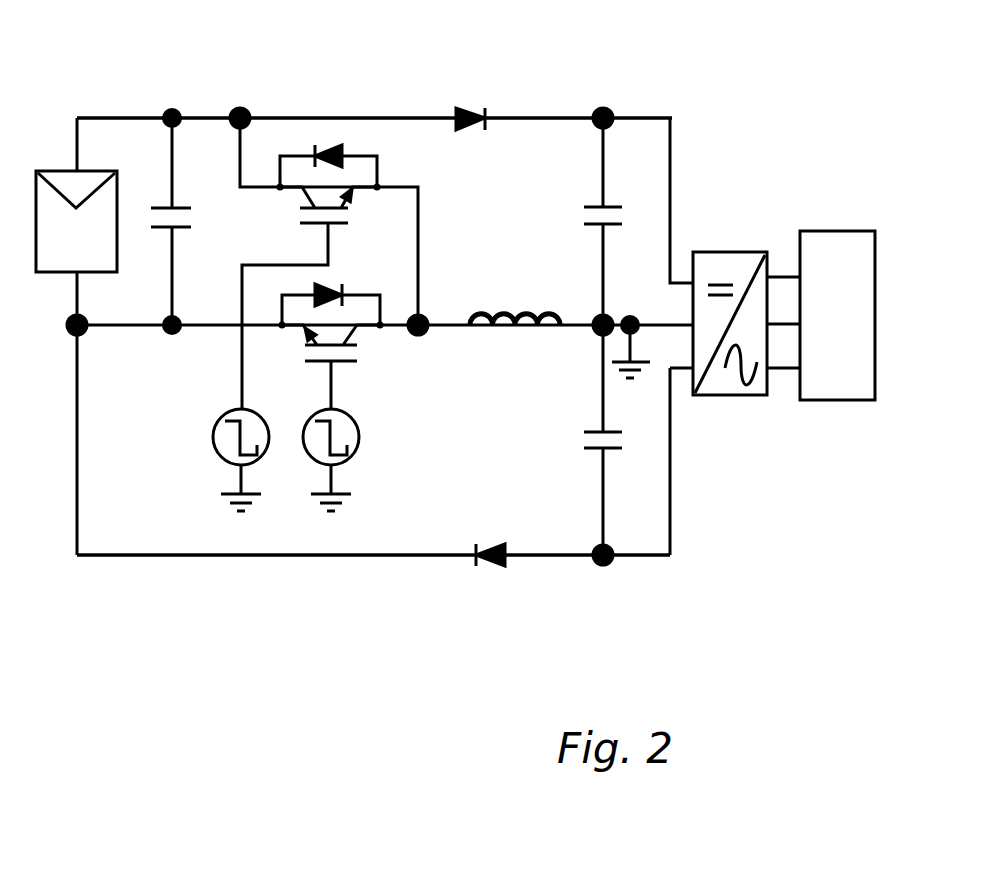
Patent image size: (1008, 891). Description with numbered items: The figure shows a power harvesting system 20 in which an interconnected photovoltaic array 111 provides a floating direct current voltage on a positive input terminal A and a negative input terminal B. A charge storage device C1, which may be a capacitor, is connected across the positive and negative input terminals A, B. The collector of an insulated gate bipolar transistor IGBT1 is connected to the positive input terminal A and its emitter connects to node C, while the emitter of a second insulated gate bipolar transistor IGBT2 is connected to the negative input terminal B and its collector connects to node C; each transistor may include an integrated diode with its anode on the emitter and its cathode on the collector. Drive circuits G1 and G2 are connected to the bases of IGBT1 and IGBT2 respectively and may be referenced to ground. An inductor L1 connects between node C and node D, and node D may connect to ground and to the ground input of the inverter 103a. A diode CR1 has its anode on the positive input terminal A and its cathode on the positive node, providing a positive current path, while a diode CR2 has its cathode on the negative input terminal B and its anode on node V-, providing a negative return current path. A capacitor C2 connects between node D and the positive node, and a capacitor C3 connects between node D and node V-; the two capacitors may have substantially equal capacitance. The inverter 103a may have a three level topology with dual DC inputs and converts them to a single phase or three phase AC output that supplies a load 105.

The power harvesting system 20 is at (376, 618).
The photovoltaic array 111 is at (76, 221).
The charge storage device C1 is at (179, 221).
The insulated gate bipolar transistor IGBT1 is at (329, 263).
The insulated gate bipolar transistor IGBT2 is at (343, 346).
The drive circuit G1 is at (213, 433).
The drive circuit G2 is at (359, 433).
The inductor L1 is at (515, 304).
The capacitor C2 is at (584, 221).
The capacitor C3 is at (583, 440).
The diode CR1 is at (472, 103).
The diode CR2 is at (490, 578).
The inverter 103a is at (765, 252).
The load 105 is at (837, 315).
The positive input terminal A is at (246, 112).
The negative input terminal B is at (82, 330).
The node C is at (422, 330).
The node D is at (601, 322).
The node V- is at (603, 558).